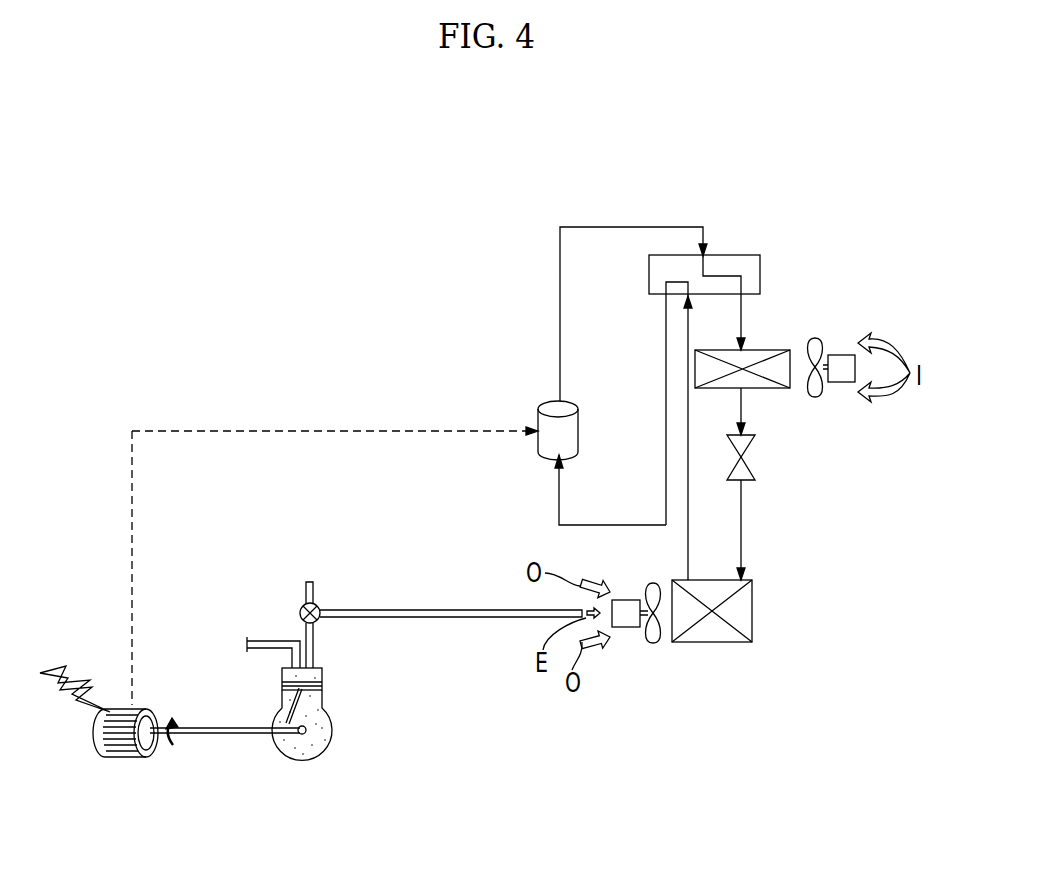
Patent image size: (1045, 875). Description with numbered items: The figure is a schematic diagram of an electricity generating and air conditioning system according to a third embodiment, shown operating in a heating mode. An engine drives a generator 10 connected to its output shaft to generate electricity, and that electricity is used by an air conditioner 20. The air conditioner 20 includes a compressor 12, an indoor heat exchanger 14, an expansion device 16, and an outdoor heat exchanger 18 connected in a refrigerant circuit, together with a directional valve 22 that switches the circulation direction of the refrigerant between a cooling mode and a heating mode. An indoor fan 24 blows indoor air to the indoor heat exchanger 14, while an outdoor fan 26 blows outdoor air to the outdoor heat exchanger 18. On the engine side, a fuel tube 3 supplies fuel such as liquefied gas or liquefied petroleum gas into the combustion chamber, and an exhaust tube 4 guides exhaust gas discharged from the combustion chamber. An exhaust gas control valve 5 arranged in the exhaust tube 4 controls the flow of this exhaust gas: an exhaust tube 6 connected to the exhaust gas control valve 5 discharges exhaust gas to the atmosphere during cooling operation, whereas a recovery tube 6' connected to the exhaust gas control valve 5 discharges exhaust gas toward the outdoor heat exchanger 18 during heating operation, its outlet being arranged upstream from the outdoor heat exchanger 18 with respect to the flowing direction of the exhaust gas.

The fuel tube 3 is at (262, 645).
The exhaust tube 4 is at (305, 632).
The exhaust gas control valve 5 is at (300, 608).
The exhaust tube 6 is at (295, 564).
The recovery tube 6' is at (451, 587).
The generator 10 is at (123, 745).
The compressor 12 is at (578, 440).
The indoor heat exchanger 14 is at (772, 349).
The expansion device 16 is at (745, 470).
The outdoor heat exchanger 18 is at (752, 590).
The air conditioner 20 is at (806, 184).
The directional valve 22 is at (747, 256).
The indoor fan 24 is at (815, 392).
The outdoor fan 26 is at (651, 640).